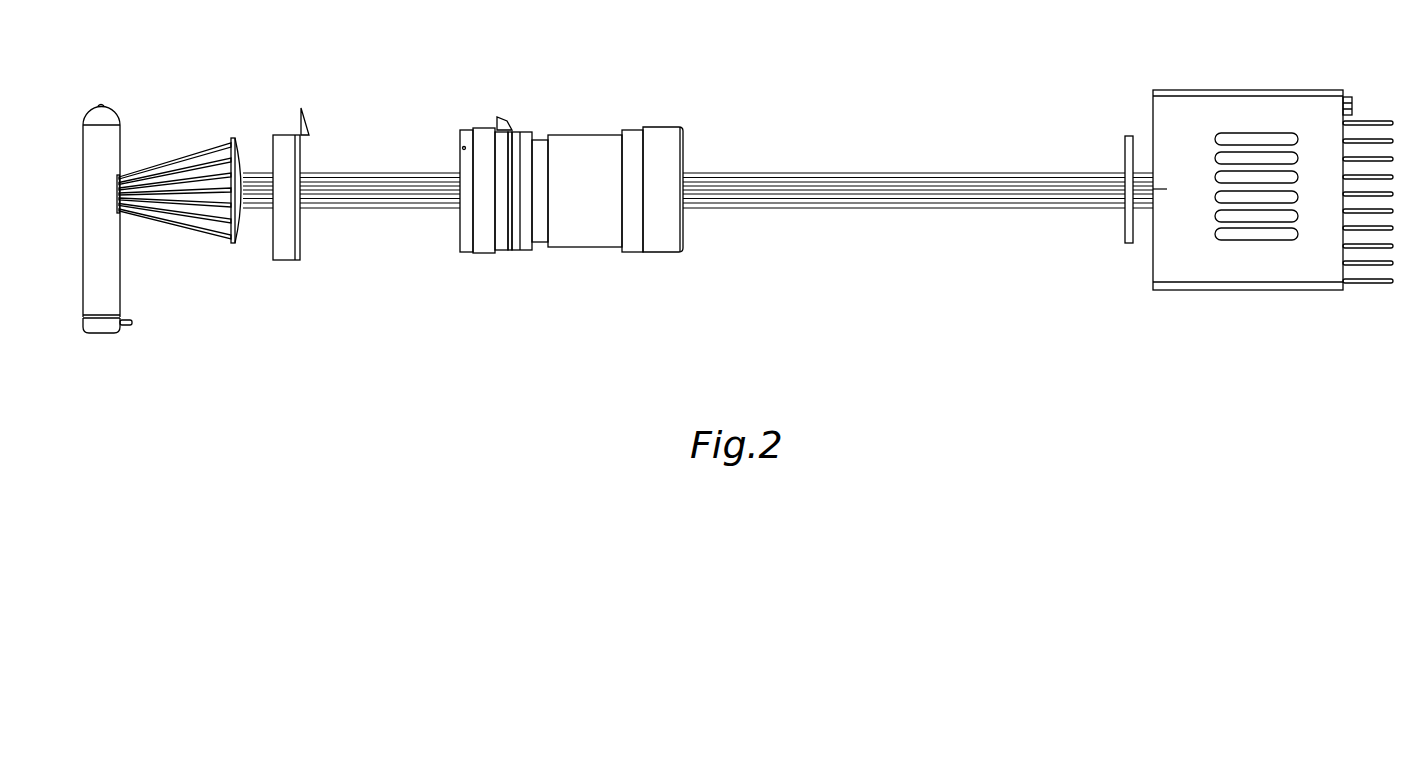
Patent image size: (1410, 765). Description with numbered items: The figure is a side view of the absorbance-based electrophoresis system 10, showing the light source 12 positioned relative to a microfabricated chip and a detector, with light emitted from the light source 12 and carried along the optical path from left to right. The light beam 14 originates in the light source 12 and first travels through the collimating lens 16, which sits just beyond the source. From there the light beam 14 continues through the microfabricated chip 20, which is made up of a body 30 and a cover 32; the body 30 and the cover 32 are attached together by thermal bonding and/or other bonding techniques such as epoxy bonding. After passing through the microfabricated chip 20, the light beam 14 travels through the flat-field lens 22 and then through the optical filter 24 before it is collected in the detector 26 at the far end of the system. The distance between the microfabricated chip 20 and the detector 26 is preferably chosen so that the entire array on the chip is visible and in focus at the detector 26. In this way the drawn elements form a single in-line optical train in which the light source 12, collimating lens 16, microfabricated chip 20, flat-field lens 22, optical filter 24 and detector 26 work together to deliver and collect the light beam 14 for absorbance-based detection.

The absorbance-based electrophoresis system 10 is at (478, 52).
The light source 12 is at (120, 292).
The light beam 14 is at (203, 152).
The collimating lens 16 is at (240, 235).
The microfabricated chip 20 is at (303, 118).
The flat-field lens 22 is at (583, 247).
The optical filter 24 is at (1127, 147).
The detector 26 is at (1170, 258).
The body 30 is at (283, 135).
The cover 32 is at (300, 242).